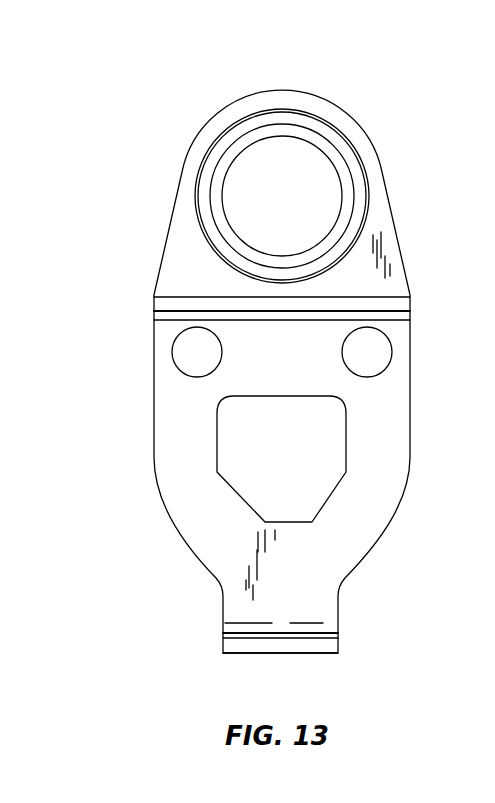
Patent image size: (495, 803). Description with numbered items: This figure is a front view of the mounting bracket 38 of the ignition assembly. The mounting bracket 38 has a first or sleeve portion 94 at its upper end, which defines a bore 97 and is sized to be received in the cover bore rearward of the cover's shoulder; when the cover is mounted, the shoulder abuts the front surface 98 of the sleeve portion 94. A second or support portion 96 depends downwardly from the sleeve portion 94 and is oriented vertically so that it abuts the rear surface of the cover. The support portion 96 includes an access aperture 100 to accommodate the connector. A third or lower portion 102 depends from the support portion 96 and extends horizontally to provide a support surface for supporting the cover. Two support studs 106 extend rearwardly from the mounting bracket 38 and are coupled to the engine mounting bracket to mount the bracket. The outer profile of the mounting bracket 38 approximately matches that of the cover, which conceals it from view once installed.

The mounting bracket 38 is at (285, 365).
The sleeve portion 94 is at (310, 135).
The support portion 96 is at (177, 435).
The bore 97 is at (312, 200).
The front surface 98 is at (343, 177).
The access aperture 100 is at (297, 460).
The lower portion 102 is at (322, 647).
The support studs 106 is at (195, 353).